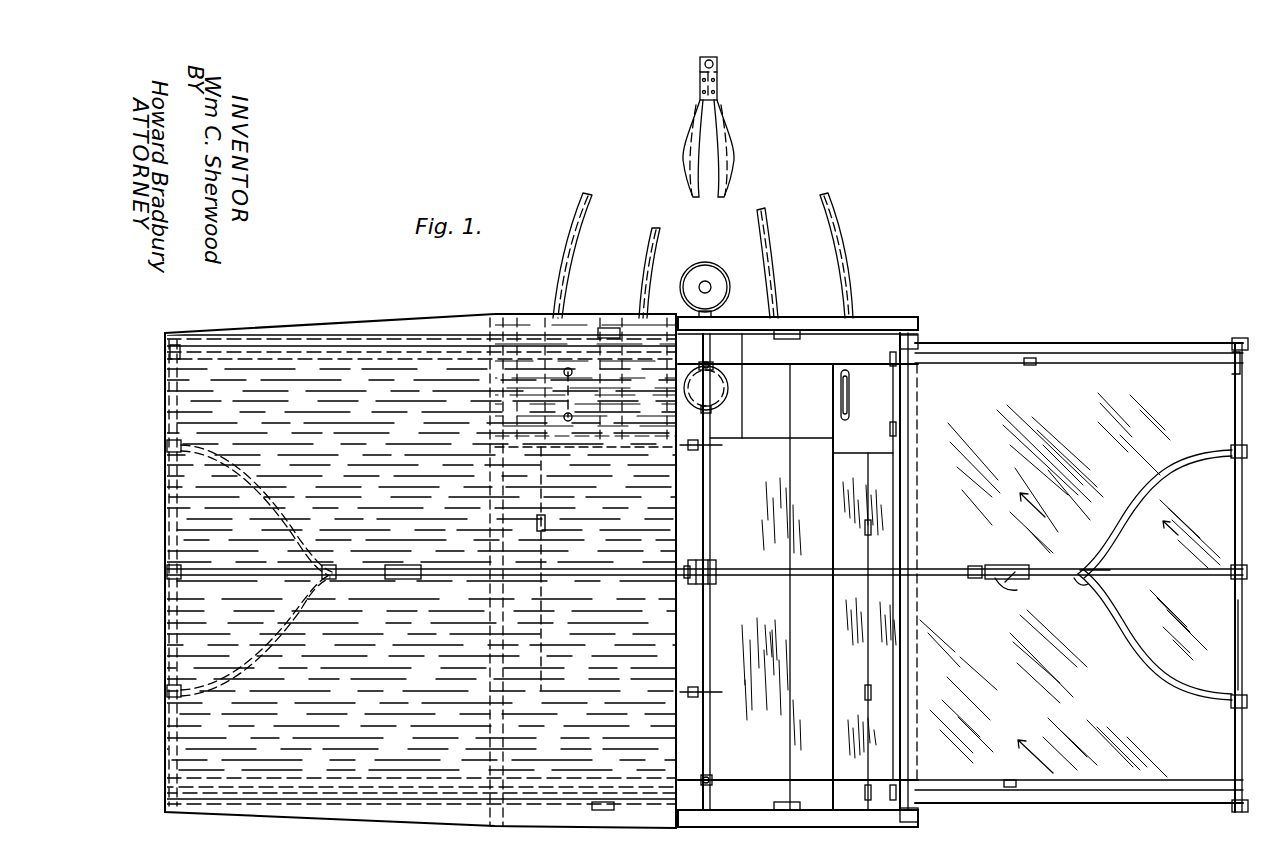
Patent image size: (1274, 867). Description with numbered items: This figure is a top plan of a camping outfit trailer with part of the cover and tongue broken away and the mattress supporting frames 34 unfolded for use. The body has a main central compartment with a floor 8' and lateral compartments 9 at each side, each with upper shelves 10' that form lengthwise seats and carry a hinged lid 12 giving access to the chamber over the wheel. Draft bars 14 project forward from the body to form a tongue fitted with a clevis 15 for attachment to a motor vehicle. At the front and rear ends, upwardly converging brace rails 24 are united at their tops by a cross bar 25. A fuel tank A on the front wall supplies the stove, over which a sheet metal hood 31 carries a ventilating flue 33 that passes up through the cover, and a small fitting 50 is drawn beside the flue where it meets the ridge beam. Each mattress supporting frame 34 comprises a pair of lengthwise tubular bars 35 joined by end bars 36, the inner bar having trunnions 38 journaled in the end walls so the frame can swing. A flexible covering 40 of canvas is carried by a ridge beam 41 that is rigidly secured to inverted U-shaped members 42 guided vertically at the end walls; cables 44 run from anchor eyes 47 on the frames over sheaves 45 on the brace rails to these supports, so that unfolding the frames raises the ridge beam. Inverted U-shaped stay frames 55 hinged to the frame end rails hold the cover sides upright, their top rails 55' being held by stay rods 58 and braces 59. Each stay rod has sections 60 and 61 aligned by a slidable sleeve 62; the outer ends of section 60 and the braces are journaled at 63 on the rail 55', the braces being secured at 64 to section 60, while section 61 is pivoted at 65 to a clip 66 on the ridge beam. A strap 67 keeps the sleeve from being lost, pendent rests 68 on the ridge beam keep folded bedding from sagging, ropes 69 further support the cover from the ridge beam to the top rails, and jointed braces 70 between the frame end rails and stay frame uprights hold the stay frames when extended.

The floor 8' is at (809, 618).
The lateral compartments 9 is at (500, 606).
The upper shelves 10' is at (896, 581).
The hinged section or lid 12 is at (833, 636).
The draft bars 14 is at (758, 212).
The clevis 15 is at (716, 64).
The brace rails 24 is at (878, 318).
The cross bar 25 is at (720, 317).
The sheet metal hood 31 is at (758, 444).
The ventilating flue 33 is at (729, 390).
The mattress supporting frames 34 is at (176, 358).
The lengthwise tubular bars 35 is at (503, 522).
The end bars 36 is at (1100, 355).
The trunnions 38 is at (918, 344).
The flexible covering 40 is at (396, 655).
The ridge beam 41 is at (710, 517).
The inverted U-shaped members 42 is at (738, 810).
The cables 44 is at (1014, 343).
The sheaves 45 is at (613, 328).
The anchor eyes 47 is at (1240, 345).
The clamp 50 is at (700, 396).
The stay frames 55 is at (685, 576).
The top rail 55' is at (1212, 645).
The stay rods 58 is at (1006, 592).
The braces 59 is at (262, 493).
The stay rod section 60 is at (272, 584).
The stay rod section 61 is at (618, 565).
The sleeve 62 is at (406, 562).
The journal 63 is at (167, 447).
The brace attachment 64 is at (1078, 584).
The pivot 65 is at (704, 582).
The clip 66 is at (706, 566).
The strap 67 is at (975, 567).
The rests 68 is at (702, 450).
The cables or ropes 69 is at (702, 362).
The jointed braces 70 is at (708, 778).
The tank A is at (710, 273).